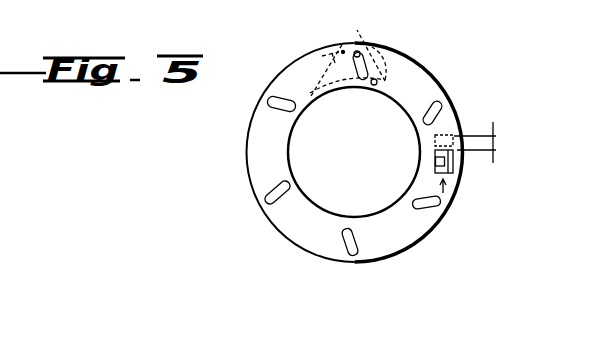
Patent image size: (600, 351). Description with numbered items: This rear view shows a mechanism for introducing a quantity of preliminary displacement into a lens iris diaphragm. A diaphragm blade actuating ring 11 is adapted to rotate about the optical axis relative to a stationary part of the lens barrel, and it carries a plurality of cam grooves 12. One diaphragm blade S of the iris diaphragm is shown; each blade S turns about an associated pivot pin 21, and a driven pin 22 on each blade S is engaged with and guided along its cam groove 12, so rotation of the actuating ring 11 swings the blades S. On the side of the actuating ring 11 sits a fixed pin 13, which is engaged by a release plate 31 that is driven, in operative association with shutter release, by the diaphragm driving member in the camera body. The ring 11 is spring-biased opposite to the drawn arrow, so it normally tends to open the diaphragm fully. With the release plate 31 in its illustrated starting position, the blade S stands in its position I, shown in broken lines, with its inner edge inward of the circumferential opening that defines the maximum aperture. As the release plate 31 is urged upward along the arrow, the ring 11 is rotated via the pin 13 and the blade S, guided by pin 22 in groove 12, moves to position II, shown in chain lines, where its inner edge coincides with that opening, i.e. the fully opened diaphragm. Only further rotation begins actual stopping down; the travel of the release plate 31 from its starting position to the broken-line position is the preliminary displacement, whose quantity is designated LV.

The diaphragm blade actuating ring 11 is at (252, 124).
The cam grooves 12 is at (277, 97).
The fixed pin 13 is at (435, 161).
The pivot pin 21 is at (377, 80).
The driven pin 22 is at (442, 82).
The release plate 31 is at (453, 172).
The diaphragm blade S is at (310, 95).
The positions I is at (356, 37).
The positions II is at (326, 45).
The quantity of preliminary displacement LV is at (486, 142).